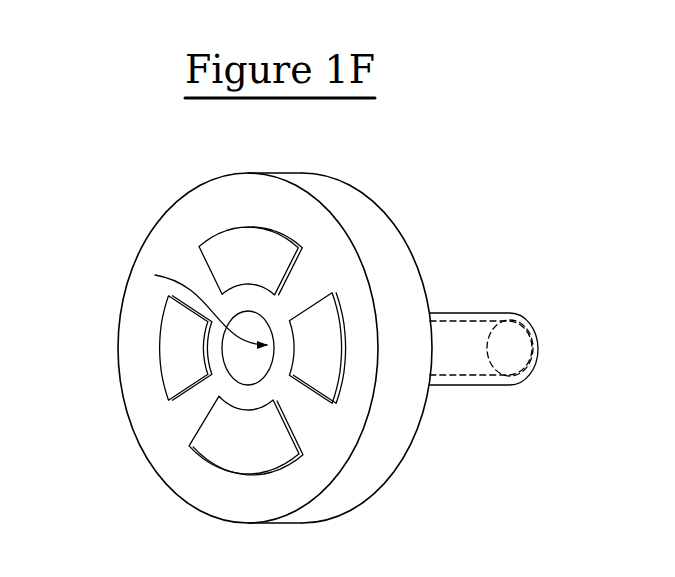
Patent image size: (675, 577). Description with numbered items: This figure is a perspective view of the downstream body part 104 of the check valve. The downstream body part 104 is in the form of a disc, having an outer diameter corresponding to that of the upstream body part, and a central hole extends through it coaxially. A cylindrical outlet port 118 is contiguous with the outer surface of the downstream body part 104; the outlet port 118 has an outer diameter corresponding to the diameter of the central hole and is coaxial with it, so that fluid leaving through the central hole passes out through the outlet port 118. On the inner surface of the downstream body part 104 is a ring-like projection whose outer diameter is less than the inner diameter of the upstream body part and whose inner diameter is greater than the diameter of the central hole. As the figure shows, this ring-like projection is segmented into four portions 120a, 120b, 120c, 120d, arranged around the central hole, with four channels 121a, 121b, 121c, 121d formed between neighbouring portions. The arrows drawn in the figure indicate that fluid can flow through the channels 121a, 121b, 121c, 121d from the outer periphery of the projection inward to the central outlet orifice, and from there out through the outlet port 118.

The downstream body part 104 is at (299, 170).
The cylindrical outlet port 118 is at (448, 313).
The portion of the ring-like projection 120a is at (278, 268).
The portion of the ring-like projection 120b is at (343, 313).
The portion of the ring-like projection 120c is at (277, 448).
The portion of the ring-like projection 120d is at (161, 371).
The channel 121a is at (307, 278).
The channel 121b is at (319, 409).
The channel 121c is at (192, 422).
The channel 121d is at (190, 268).